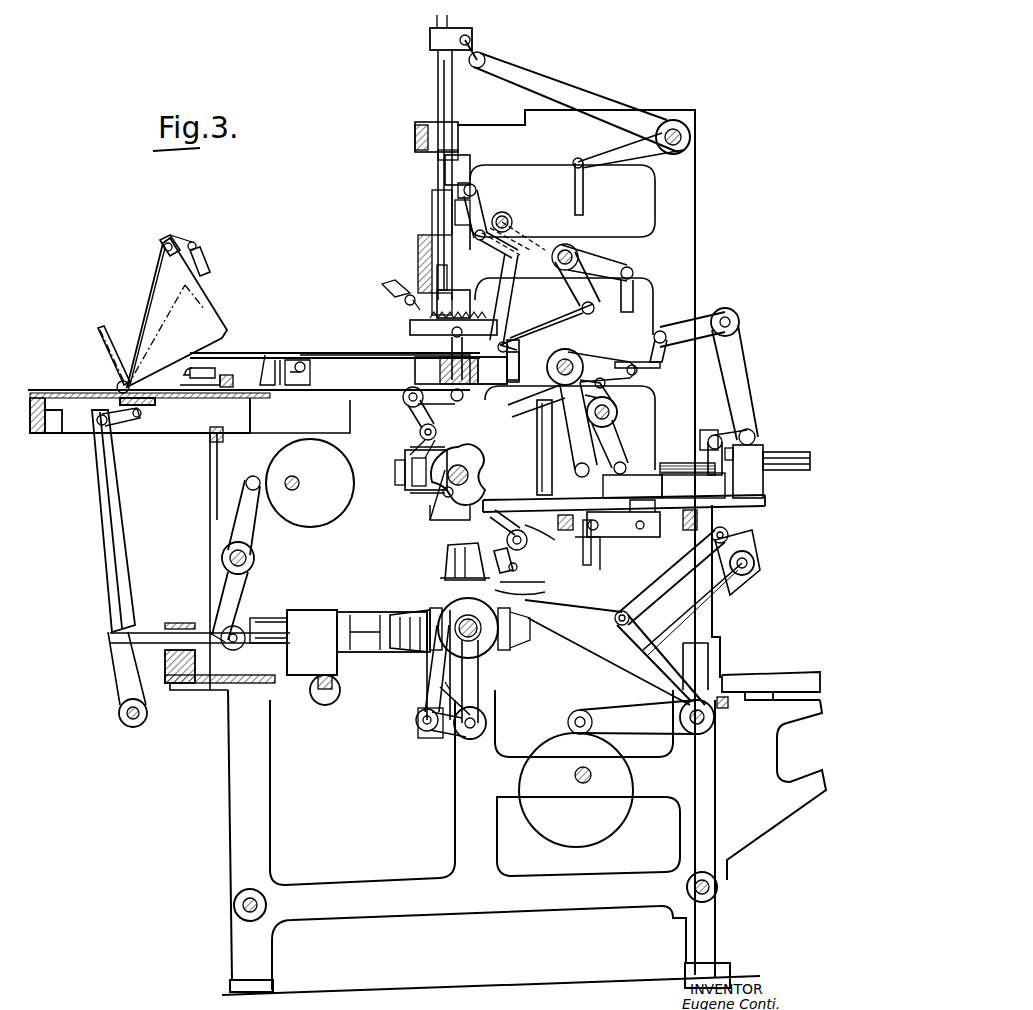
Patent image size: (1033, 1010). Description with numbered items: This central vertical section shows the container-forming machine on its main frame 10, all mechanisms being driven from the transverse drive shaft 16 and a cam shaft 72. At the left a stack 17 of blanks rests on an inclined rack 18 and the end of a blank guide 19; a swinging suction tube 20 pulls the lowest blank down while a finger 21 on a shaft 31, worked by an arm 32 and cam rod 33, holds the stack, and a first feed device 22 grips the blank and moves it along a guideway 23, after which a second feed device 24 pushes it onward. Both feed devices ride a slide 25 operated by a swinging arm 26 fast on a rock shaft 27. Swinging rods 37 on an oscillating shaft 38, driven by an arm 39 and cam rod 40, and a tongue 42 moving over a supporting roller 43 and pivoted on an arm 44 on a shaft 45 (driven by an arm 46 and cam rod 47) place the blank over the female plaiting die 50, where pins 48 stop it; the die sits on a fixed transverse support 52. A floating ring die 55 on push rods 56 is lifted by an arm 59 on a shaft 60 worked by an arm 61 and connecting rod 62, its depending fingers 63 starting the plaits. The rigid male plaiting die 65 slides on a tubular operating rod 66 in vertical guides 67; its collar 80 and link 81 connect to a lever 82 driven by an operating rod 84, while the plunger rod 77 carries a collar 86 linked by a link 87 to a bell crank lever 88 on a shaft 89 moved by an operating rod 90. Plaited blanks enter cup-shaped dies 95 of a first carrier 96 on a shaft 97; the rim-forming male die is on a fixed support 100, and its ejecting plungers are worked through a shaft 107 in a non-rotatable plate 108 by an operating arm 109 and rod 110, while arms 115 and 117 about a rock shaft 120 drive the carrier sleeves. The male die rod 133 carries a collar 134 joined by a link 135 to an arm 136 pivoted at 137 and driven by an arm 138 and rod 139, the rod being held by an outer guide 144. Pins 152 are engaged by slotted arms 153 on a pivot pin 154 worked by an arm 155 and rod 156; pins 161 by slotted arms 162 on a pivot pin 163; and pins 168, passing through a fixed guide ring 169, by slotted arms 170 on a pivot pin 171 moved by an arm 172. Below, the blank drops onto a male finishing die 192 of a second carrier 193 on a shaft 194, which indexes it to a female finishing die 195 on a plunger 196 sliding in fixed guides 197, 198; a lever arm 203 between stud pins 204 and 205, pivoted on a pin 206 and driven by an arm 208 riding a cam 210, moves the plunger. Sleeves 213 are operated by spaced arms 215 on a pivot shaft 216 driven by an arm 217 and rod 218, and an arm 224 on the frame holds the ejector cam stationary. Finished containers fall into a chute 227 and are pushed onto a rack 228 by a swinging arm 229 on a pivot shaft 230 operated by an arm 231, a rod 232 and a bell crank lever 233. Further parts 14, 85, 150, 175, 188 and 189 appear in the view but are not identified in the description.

The main frame 10 is at (700, 227).
The pivoted lever 14 is at (230, 310).
The transverse drive shaft 16 is at (285, 483).
The stack of blanks 17 is at (165, 308).
The inclined rack 18 is at (140, 348).
The blank guide 19 is at (350, 348).
The swinging suction tube 20 is at (225, 372).
The finger 21 is at (215, 368).
The first feed device 22 is at (278, 362).
The guideway 23 is at (284, 400).
The second feed device 24 is at (302, 362).
The slide 25 is at (205, 400).
The swinging arm 26 is at (106, 556).
The rock shaft 27 is at (125, 725).
The shaft 31 is at (175, 237).
The arm 32 is at (196, 243).
The cam rod 33 is at (208, 262).
The swinging rods 37 is at (415, 335).
The oscillating shaft 38 is at (442, 265).
The arm 39 is at (432, 300).
The cam rod 40 is at (380, 285).
The tongue 42 is at (556, 318).
The supporting roller 43 is at (520, 345).
The arm 44 is at (586, 295).
The shaft 45 is at (510, 215).
The arm 46 is at (528, 237).
The cam rod 47 is at (510, 278).
The pins 48 is at (466, 340).
The female plaiting die 50 is at (480, 318).
The fixed transverse support 52 is at (519, 368).
The floating ring die 55 is at (470, 305).
The push rods 56 is at (415, 365).
The arm 59 is at (446, 370).
The shaft 60 is at (403, 395).
The arm 61 is at (405, 413).
The connecting rod 62 is at (420, 432).
The depending fingers 63 is at (492, 370).
The rigid male plaiting die 65 is at (390, 340).
The tubular operating rod 66 is at (458, 140).
The vertical guides 67 is at (470, 165).
The cam shaft 72 is at (592, 778).
The rod 77 is at (438, 95).
The collar 80 is at (480, 188).
The link 81 is at (482, 210).
The lever 82 is at (560, 243).
The operating rod 84 is at (633, 295).
The lever 85 is at (610, 258).
The collar 86 is at (460, 35).
The link 87 is at (487, 52).
The bell crank lever 88 is at (628, 110).
The shaft 89 is at (692, 130).
The operating rod 90 is at (586, 193).
The cup-shaped dies 95 is at (458, 402).
The first carrier 96 is at (435, 500).
The shaft 97 is at (432, 520).
The fixed support 100 is at (760, 500).
The shaft 107 is at (400, 468).
The non-rotatable plate 108 is at (395, 480).
The operating arm 109 is at (447, 560).
The rod 110 is at (430, 515).
The arms 115 is at (507, 575).
The arms 117 is at (525, 540).
The rock shaft 120 is at (530, 593).
The rod 133 is at (695, 450).
The collar 134 is at (740, 460).
The link 135 is at (730, 440).
The arm 136 is at (740, 380).
The pivot 137 is at (740, 318).
The arm 138 is at (700, 323).
The rod 139 is at (663, 355).
The outer guide 144 is at (785, 452).
The block 150 is at (555, 525).
The pins 152 is at (703, 440).
The slotted arms 153 is at (670, 478).
The pivot pin 154 is at (645, 530).
The arm 155 is at (605, 535).
The rod 156 is at (600, 560).
The pins 161 is at (593, 455).
The slotted arms 162 is at (617, 412).
The pivot pin 163 is at (615, 430).
The pins 168 is at (585, 565).
The fixed guide ring 169 is at (545, 555).
The slotted arms 170 is at (515, 400).
The pivot pin 171 is at (568, 345).
The arm 172 is at (618, 345).
The link 175 is at (630, 390).
The arm 188 is at (612, 357).
The bar 189 is at (535, 420).
The male finishing die 192 is at (440, 610).
The second carrier 193 is at (440, 608).
The shaft 194 is at (478, 640).
The female finishing die 195 is at (352, 650).
The plunger 196 is at (262, 600).
The fixed guide 197 is at (312, 680).
The fixed guide 198 is at (175, 622).
The lever arm 203 is at (213, 630).
The stud pin 204 is at (240, 650).
The stud pin 205 is at (200, 640).
The pin 206 is at (225, 552).
The arm 208 is at (230, 492).
The cam 210 is at (278, 452).
The sleeves 213 is at (427, 680).
The spaced arms 215 is at (420, 700).
The pivot shaft 216 is at (427, 732).
The arm 217 is at (458, 737).
The rod 218 is at (470, 698).
The arm 224 is at (486, 715).
The chute 227 is at (605, 655).
The rack 228 is at (815, 650).
The swinging arm 229 is at (720, 590).
The pivot shaft 230 is at (755, 560).
The arm 231 is at (730, 540).
The rod 232 is at (700, 600).
The bell crank lever 233 is at (640, 668).